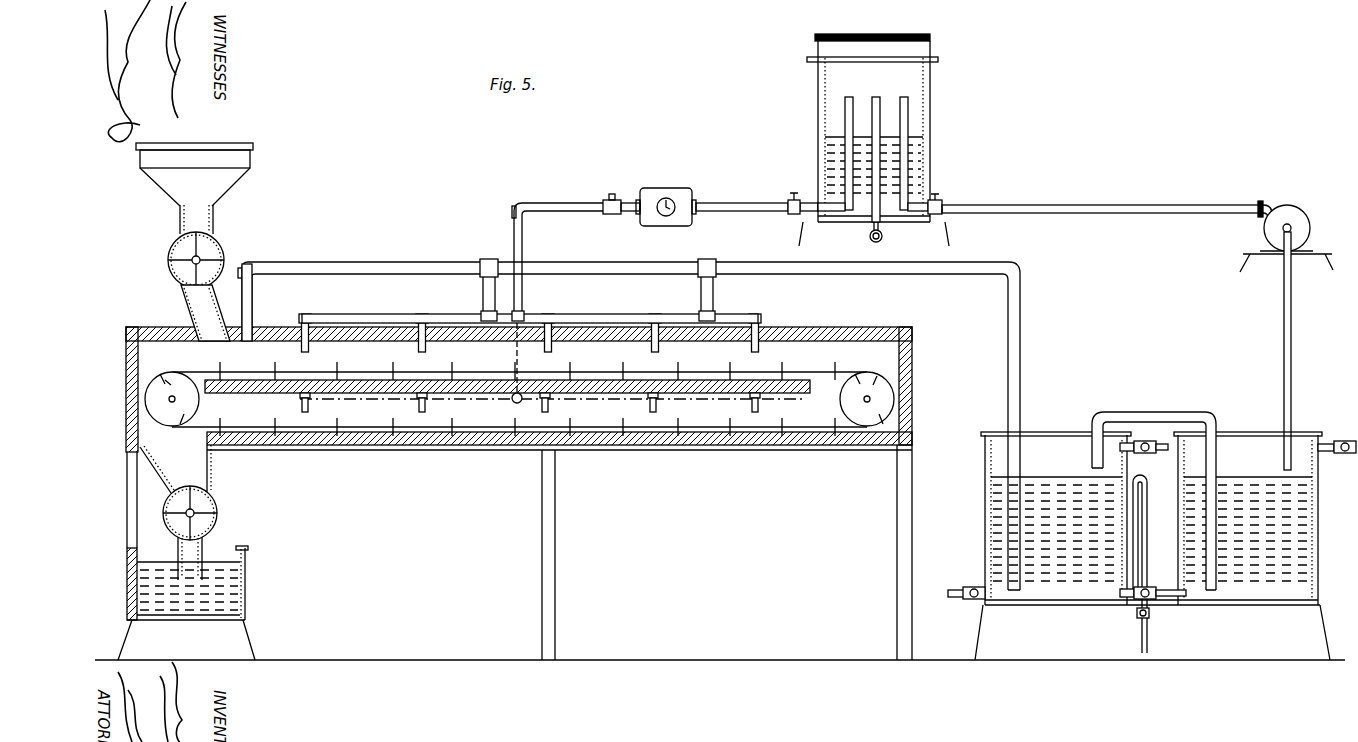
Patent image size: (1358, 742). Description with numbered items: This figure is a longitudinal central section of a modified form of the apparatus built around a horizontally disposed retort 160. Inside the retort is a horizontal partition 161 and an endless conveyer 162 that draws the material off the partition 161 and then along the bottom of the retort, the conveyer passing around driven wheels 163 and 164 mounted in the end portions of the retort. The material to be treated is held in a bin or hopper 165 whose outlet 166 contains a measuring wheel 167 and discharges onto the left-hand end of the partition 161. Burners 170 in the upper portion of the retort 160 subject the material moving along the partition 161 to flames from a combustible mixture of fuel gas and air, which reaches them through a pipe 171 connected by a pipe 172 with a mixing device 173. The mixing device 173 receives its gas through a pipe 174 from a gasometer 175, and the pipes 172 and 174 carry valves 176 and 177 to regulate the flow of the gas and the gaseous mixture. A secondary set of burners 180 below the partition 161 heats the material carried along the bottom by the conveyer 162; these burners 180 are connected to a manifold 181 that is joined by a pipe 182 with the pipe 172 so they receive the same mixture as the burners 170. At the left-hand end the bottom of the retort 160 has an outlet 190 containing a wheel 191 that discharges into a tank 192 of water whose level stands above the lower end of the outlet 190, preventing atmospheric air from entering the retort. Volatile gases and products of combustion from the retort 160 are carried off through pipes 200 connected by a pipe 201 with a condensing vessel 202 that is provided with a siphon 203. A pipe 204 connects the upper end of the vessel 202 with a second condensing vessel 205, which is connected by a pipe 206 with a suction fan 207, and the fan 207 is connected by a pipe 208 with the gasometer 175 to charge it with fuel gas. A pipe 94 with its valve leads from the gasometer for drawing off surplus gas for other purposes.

The pipe 94 is at (877, 97).
The retort 160 is at (480, 447).
The horizontal partition 161 is at (480, 380).
The endless conveyer 162 is at (371, 380).
The driven wheel 163 is at (178, 378).
The driven wheel 164 is at (861, 379).
The bin or hopper 165 is at (236, 186).
The outlet 166 is at (180, 308).
The measuring wheel 167 is at (178, 268).
The burners 170 is at (306, 351).
The pipe 171 is at (600, 317).
The pipe 172 is at (571, 212).
The mixing device 173 is at (658, 227).
The pipe 174 is at (738, 203).
The gasometer 175 is at (879, 44).
The valve 176 is at (613, 199).
The valve 177 is at (795, 199).
The secondary burners 180 is at (310, 409).
The manifold 181 is at (483, 399).
The pipe 182 is at (520, 361).
The outlet 190 is at (209, 474).
The wheel 191 is at (218, 513).
The tank 192 is at (247, 560).
The pipes 200 is at (254, 303).
The pipe 201 is at (838, 273).
The condensing vessel 202 is at (997, 458).
The siphon 203 is at (1143, 540).
The pipe 204 is at (1160, 414).
The second condensing vessel 205 is at (1252, 434).
The pipe 206 is at (1283, 332).
The suction fan 207 is at (1270, 232).
The pipe 208 is at (1136, 206).